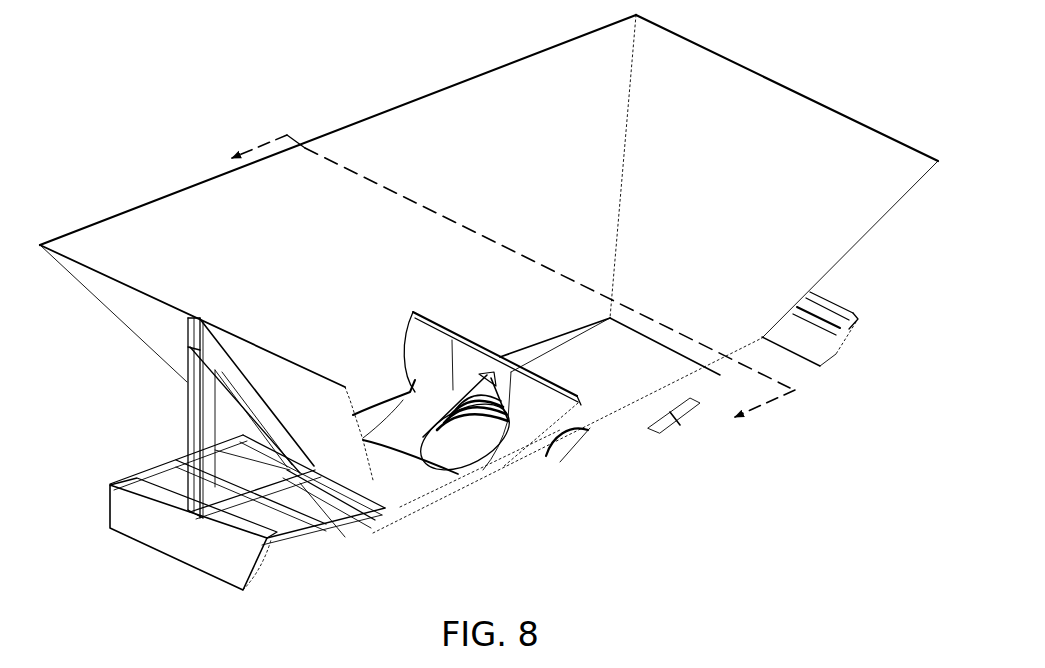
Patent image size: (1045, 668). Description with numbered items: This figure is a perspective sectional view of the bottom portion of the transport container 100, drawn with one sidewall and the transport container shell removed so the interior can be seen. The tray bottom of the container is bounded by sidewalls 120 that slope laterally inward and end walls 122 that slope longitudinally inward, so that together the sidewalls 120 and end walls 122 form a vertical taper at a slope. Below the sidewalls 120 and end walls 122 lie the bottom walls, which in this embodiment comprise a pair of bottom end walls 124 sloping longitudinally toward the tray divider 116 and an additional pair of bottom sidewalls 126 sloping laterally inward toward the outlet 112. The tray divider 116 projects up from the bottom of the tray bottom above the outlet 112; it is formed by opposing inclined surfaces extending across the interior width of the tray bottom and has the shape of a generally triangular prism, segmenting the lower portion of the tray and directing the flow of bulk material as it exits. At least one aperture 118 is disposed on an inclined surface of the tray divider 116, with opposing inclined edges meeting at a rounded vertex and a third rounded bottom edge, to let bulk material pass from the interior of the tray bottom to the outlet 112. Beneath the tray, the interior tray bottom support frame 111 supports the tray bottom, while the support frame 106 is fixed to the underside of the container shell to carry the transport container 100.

The transport container 100 is at (97, 62).
The support frame 106 is at (228, 572).
The interior tray bottom support frame 111 is at (255, 412).
The outlet 112 is at (555, 457).
The tray divider 116 is at (432, 350).
The aperture 118 is at (453, 390).
The sidewall 120 is at (503, 147).
The end wall 122 is at (763, 142).
The bottom end wall 124 is at (642, 373).
The bottom sidewall 126 is at (532, 363).